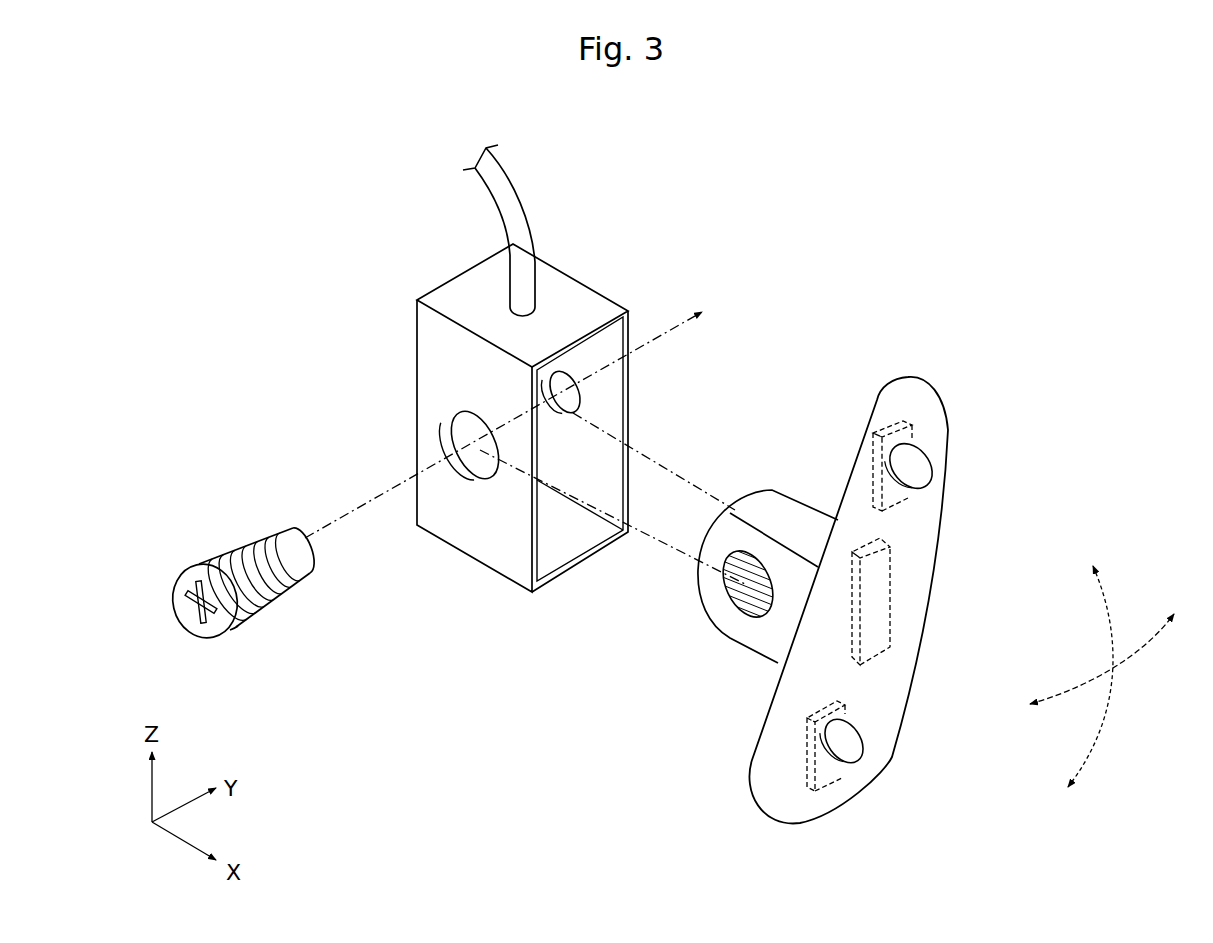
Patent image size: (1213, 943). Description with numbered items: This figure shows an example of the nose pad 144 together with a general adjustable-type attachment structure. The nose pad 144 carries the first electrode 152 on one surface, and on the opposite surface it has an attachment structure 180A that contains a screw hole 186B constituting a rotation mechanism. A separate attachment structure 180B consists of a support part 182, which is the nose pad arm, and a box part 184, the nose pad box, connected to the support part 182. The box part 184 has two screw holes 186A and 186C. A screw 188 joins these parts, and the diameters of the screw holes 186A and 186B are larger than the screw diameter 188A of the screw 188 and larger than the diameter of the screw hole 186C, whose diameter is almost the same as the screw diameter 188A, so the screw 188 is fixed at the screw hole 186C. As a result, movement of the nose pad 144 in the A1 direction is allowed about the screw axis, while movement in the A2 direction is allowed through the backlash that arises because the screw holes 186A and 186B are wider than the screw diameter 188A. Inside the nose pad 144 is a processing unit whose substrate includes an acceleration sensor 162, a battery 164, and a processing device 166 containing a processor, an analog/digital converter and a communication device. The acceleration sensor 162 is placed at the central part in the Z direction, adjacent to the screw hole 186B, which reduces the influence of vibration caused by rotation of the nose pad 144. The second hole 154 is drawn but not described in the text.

The nose pad 144 is at (900, 606).
The first electrode 152 is at (935, 454).
The second through hole 154 is at (862, 754).
The acceleration sensor 162 is at (892, 599).
The battery 164 is at (888, 426).
The processing device 166 is at (848, 713).
The attachment structure 180A is at (741, 551).
The attachment structure 180B is at (535, 342).
The support part 182 is at (508, 197).
The box part 184 is at (577, 298).
The screw hole 186A is at (447, 428).
The screw hole 186B is at (744, 614).
The screw hole 186C is at (578, 398).
The screw 188 is at (237, 589).
The screw diameter 188A is at (288, 577).
The A1 direction A1 is at (1090, 662).
The A2 direction A2 is at (1081, 670).